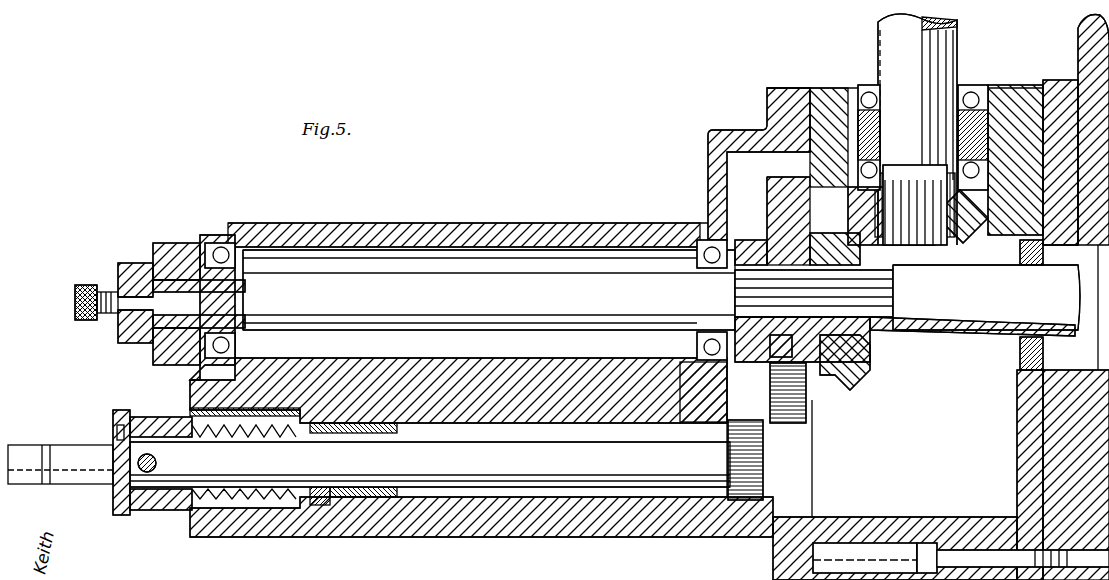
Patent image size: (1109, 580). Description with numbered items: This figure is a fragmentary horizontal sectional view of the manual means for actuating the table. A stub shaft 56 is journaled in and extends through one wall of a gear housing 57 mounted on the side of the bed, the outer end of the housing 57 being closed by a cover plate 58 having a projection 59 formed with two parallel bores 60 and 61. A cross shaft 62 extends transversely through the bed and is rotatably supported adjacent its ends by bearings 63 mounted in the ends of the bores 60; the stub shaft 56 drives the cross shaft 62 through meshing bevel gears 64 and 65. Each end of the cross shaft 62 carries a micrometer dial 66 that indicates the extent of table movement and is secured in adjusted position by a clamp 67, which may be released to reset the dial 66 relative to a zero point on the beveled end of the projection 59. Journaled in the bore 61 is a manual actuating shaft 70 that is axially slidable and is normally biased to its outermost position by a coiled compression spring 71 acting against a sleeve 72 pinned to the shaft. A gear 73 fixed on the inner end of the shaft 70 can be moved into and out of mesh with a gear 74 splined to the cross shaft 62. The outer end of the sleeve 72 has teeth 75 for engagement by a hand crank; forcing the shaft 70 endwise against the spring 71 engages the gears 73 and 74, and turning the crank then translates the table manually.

The stub shaft 56 is at (955, 48).
The gear housing 57 is at (1003, 90).
The cover plate 58 is at (752, 130).
The projection 59 is at (497, 222).
The bore 60 is at (605, 245).
The bore 61 is at (598, 500).
The cross shaft 62 is at (960, 320).
The bearings 63 is at (222, 243).
The bevel gear 64 is at (975, 232).
The bevel gear 65 is at (858, 368).
The micrometer dial 66 is at (172, 243).
The clamp 67 is at (140, 263).
The manual actuating shaft 70 is at (547, 475).
The coiled compression spring 71 is at (232, 500).
The sleeve 72 is at (155, 510).
The gear 73 is at (745, 500).
The gear 74 is at (800, 423).
The teeth 75 is at (117, 432).